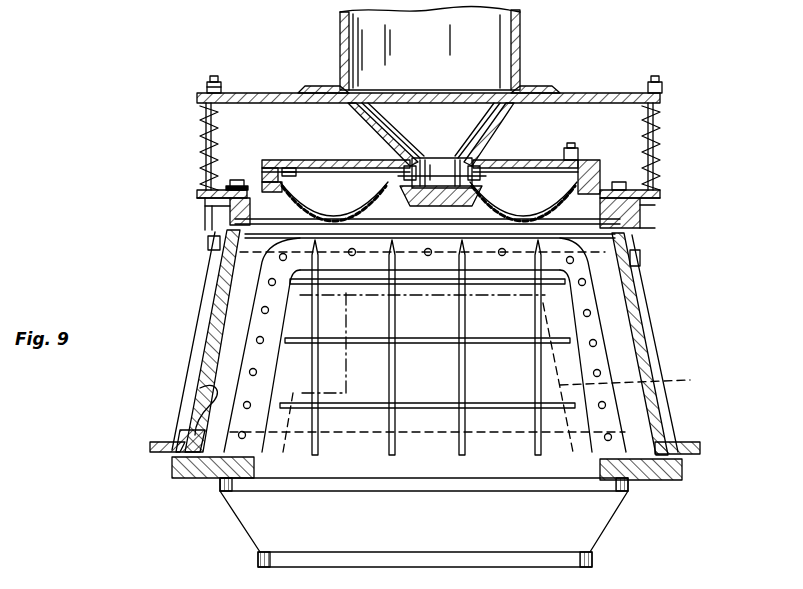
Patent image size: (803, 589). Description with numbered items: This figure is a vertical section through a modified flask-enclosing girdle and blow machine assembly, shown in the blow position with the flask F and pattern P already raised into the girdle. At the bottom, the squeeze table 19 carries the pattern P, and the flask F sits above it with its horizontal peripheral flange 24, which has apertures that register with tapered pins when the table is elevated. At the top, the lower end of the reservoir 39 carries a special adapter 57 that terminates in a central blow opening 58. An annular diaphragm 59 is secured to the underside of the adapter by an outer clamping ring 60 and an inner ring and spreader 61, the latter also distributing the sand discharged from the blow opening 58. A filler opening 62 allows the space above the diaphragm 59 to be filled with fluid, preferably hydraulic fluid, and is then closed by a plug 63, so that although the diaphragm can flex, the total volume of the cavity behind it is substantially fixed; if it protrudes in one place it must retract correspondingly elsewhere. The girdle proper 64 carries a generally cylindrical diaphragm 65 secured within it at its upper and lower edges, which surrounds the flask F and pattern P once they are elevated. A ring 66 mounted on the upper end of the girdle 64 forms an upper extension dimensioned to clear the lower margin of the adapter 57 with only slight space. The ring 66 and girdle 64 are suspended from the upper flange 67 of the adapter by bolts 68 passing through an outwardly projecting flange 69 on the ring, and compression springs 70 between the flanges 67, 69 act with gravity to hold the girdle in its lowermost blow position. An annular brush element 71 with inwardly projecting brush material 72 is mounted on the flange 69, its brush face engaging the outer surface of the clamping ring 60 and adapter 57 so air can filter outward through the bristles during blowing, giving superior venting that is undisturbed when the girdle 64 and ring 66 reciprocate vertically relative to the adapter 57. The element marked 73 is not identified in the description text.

The reservoir 39 is at (521, 42).
The adapter 57 is at (577, 99).
The blow opening 58 is at (430, 172).
The annular diaphragm 59 is at (300, 204).
The outer clamping ring 60 is at (292, 178).
The inner ring and spreader 61 is at (442, 203).
The filler opening 62 is at (600, 195).
The plug 63 is at (577, 158).
The girdle 64 is at (215, 270).
The cylindrical diaphragm 65 is at (200, 390).
The ring 66 is at (231, 215).
The upper flange 67 is at (196, 98).
The bolt 68 is at (200, 132).
The outwardly projecting flange 69 is at (198, 192).
The compression spring 70 is at (203, 148).
The annular brush element 71 is at (627, 185).
The brush material 72 is at (660, 130).
The inclined wall 73 is at (638, 262).
The flask F is at (613, 320).
The pattern P is at (632, 376).
The horizontal peripheral flange 24 is at (176, 470).
The squeeze table 19 is at (226, 484).